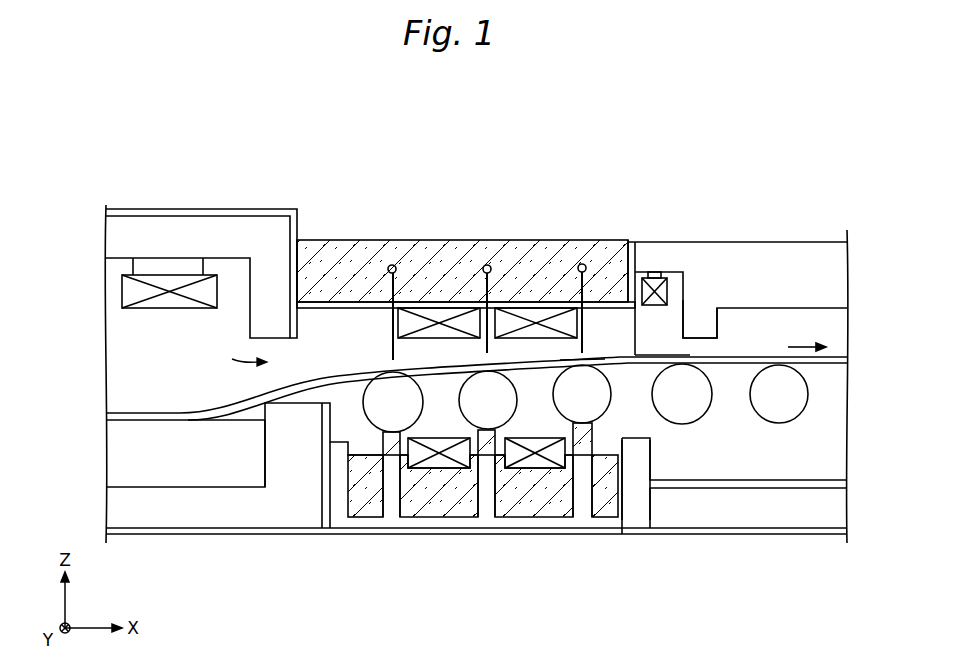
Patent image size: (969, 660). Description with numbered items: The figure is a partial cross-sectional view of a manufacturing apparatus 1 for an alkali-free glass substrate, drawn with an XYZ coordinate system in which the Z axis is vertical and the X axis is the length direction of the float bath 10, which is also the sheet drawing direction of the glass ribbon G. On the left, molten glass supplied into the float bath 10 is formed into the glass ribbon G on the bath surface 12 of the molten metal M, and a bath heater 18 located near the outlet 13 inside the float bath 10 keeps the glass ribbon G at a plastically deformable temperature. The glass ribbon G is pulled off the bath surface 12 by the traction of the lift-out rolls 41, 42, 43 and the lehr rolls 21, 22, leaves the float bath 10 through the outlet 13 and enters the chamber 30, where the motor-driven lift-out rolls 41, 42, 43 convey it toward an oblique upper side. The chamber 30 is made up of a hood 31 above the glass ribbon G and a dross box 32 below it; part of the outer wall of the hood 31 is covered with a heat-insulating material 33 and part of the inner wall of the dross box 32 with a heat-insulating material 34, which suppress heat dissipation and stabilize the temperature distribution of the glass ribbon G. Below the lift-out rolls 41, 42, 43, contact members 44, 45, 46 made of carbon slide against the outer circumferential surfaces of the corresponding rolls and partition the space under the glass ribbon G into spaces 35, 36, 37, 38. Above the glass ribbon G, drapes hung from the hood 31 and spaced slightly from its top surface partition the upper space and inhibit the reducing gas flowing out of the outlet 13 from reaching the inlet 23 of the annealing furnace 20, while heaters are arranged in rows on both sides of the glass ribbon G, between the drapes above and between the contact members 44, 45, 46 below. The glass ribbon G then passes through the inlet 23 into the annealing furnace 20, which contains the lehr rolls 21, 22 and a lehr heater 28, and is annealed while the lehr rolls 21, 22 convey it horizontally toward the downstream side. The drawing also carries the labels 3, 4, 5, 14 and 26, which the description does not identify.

The manufacturing apparatus 1 is at (44, 159).
The substrate transport direction 3 is at (654, 374).
The substrate 4 is at (586, 357).
The film 5 is at (388, 350).
The float bath 10 is at (213, 505).
The bath surface 12 is at (128, 421).
The outlet 13 is at (235, 356).
The inner wall 14 is at (258, 321).
The bath heater 18 is at (122, 291).
The annealing furnace 20 is at (781, 255).
The lehr roll 21 is at (712, 404).
The lehr roll 22 is at (810, 404).
The inlet 23 is at (637, 430).
The chamber step 26 is at (672, 357).
The lehr heater 28 is at (655, 272).
The chamber 30 is at (466, 248).
The hood 31 is at (453, 365).
The dross box 32 is at (422, 528).
The heat-insulating material 33 is at (551, 263).
The heat-insulating material 34 is at (443, 505).
The space 35 is at (626, 368).
The space 36 is at (532, 373).
The space 37 is at (447, 371).
The space 38 is at (345, 406).
The lift-out roll 41 is at (414, 411).
The lift-out roll 42 is at (508, 411).
The lift-out roll 43 is at (603, 411).
The contact member 44 is at (392, 455).
The contact member 45 is at (488, 455).
The contact member 46 is at (582, 455).
The glass ribbon G is at (205, 408).
The molten metal M is at (130, 461).